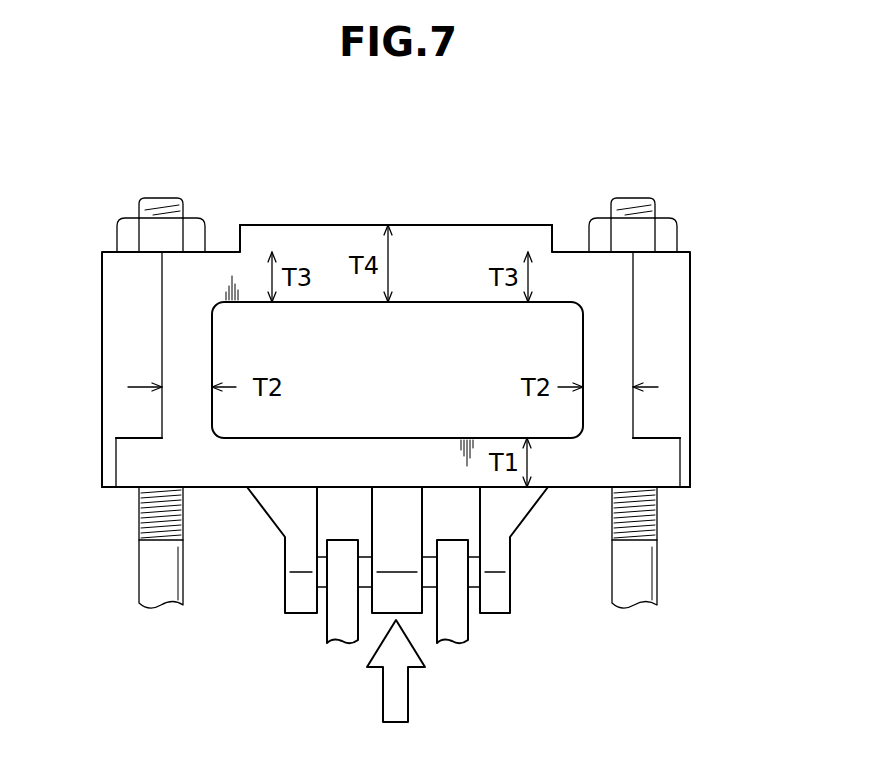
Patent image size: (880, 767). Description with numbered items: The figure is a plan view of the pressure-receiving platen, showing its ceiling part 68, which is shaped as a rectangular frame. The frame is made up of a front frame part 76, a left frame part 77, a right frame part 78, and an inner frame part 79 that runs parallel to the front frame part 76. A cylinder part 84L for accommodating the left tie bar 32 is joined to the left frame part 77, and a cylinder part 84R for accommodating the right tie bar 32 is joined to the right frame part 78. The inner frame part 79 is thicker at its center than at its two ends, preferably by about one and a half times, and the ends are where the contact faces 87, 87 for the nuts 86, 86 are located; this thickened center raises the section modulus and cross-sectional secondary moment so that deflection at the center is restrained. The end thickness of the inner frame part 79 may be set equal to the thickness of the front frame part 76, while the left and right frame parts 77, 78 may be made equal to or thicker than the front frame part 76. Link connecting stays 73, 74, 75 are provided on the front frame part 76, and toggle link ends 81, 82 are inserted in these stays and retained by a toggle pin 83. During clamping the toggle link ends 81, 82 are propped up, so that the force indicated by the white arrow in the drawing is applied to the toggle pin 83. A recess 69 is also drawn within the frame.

The ceiling part 68 is at (504, 222).
The inner frame part 79 is at (335, 280).
The recess 69 is at (397, 304).
The cylinder part 84L is at (118, 312).
The cylinder part 84R is at (680, 312).
The left frame part 77 is at (178, 418).
The right frame part 78 is at (592, 407).
The nut 86 is at (130, 223).
The contact face 87 is at (228, 250).
The tie bar 32 is at (158, 575).
The front frame part 76 is at (240, 490).
The link connecting stay 73 is at (295, 610).
The link connecting stay 74 is at (382, 610).
The link connecting stay 75 is at (498, 610).
The toggle pin 83 is at (475, 562).
The toggle link end 81 is at (340, 640).
The toggle link end 82 is at (452, 640).